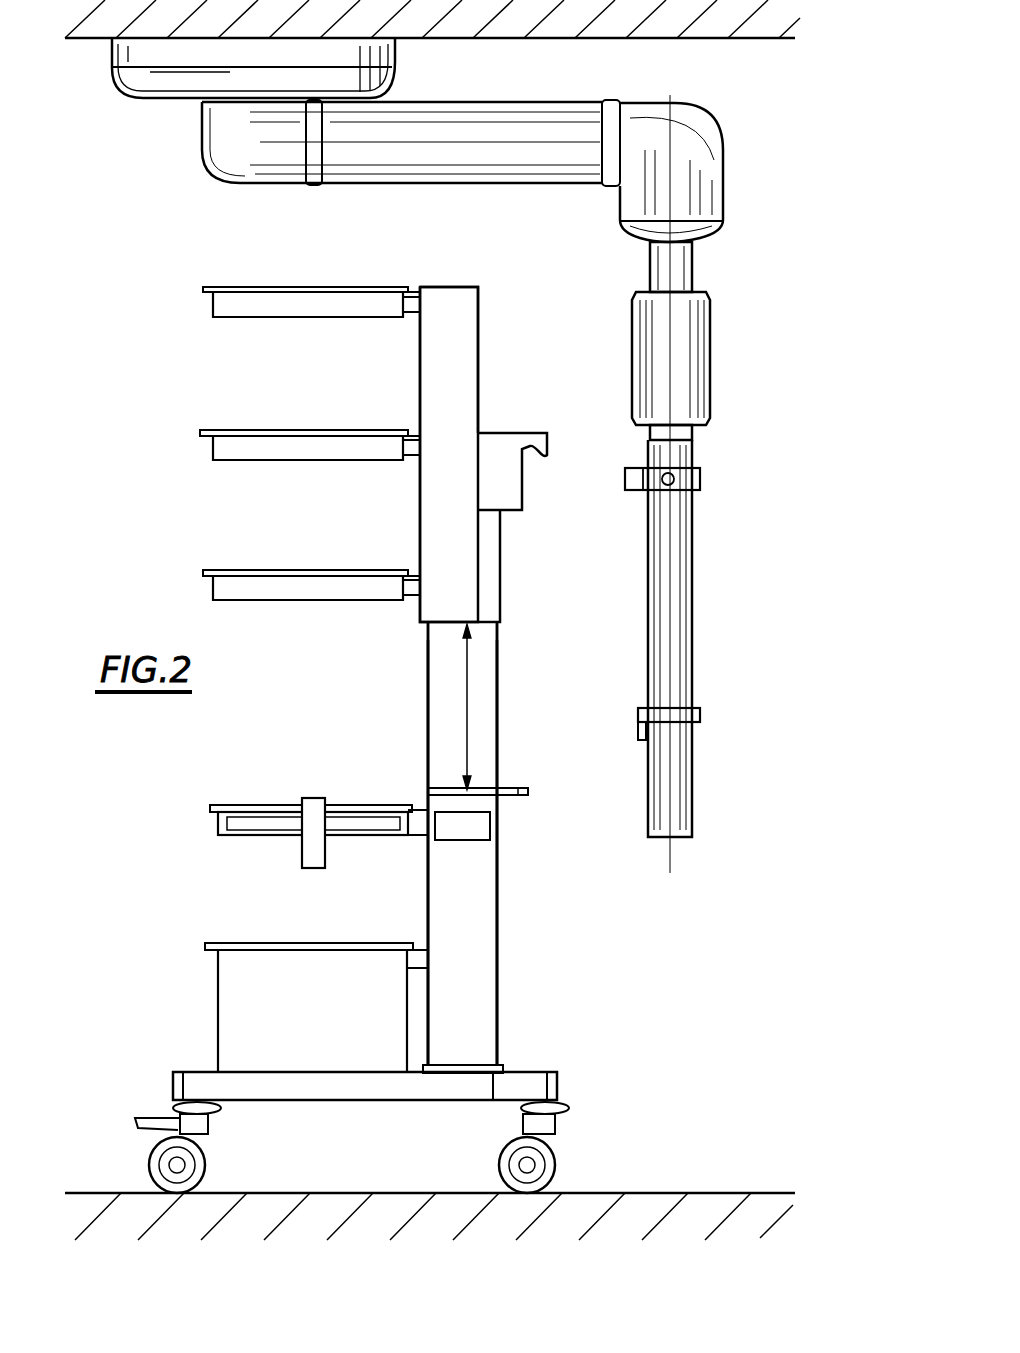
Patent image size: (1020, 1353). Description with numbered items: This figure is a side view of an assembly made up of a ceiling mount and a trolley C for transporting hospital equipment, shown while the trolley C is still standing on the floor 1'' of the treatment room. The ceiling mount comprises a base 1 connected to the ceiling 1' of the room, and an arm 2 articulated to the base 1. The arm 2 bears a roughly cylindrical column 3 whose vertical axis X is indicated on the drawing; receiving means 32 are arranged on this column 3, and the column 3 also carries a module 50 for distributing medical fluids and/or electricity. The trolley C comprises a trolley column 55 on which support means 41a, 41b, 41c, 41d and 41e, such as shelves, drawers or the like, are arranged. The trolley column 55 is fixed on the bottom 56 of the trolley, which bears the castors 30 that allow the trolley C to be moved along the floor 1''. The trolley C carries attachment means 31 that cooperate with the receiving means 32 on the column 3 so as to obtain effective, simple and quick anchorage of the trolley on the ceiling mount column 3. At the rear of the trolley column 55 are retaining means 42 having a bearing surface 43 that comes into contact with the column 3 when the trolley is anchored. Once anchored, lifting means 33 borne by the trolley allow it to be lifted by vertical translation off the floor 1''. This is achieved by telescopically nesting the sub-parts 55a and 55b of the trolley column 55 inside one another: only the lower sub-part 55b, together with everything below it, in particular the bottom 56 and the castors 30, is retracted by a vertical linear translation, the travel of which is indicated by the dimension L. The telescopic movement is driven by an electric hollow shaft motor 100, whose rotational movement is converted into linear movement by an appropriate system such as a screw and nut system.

The base 1 is at (312, 68).
The ceiling 1' is at (430, 79).
The floor 1'' is at (430, 1165).
The arm 2 is at (735, 132).
The column 3 is at (700, 270).
The module 50 is at (718, 375).
The receiving means 32 is at (702, 481).
The trolley C is at (445, 276).
The attachment means 31 is at (511, 428).
The sub-part 55a is at (472, 557).
The sub-part 55b is at (455, 668).
The lifting means 33 is at (500, 713).
The retaining means 42 is at (512, 782).
The bearing surface 43 is at (546, 790).
The trolley column 55 is at (505, 960).
The bottom 56 is at (558, 1055).
The castors 30 is at (216, 1160).
The support means 41a is at (277, 280).
The support means 41b is at (278, 420).
The support means 41c is at (266, 563).
The support means 41d is at (280, 795).
The support means 41e is at (300, 936).
The hollow shaft motor 100 is at (455, 840).
The stroke length L is at (458, 707).
The axis X-X' X is at (666, 494).